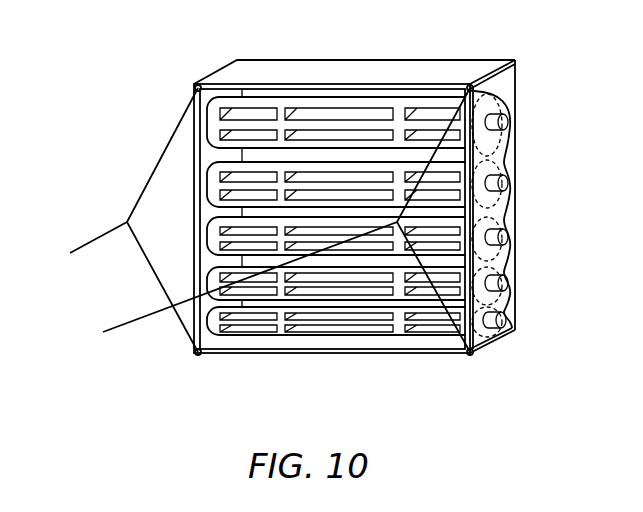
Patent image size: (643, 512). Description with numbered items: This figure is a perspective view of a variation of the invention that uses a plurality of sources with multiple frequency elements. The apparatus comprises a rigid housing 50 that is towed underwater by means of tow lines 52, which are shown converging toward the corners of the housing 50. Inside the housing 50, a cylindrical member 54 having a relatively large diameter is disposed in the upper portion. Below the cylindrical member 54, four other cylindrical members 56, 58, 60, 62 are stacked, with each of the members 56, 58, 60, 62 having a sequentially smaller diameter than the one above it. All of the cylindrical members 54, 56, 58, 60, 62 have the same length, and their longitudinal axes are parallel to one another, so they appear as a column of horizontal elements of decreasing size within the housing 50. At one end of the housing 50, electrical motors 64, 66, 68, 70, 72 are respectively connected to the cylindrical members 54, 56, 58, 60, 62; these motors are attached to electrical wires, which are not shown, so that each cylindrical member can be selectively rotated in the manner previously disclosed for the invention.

The rigid housing 50 is at (388, 70).
The tow lines 52 is at (152, 311).
The cylindrical member 54 is at (218, 123).
The cylindrical member 56 is at (215, 187).
The cylindrical member 58 is at (218, 237).
The cylindrical member 60 is at (218, 282).
The cylindrical member 62 is at (240, 333).
The electrical motor 64 is at (503, 122).
The electrical motor 66 is at (503, 183).
The electrical motor 68 is at (503, 237).
The electrical motor 70 is at (503, 283).
The electrical motor 72 is at (508, 323).